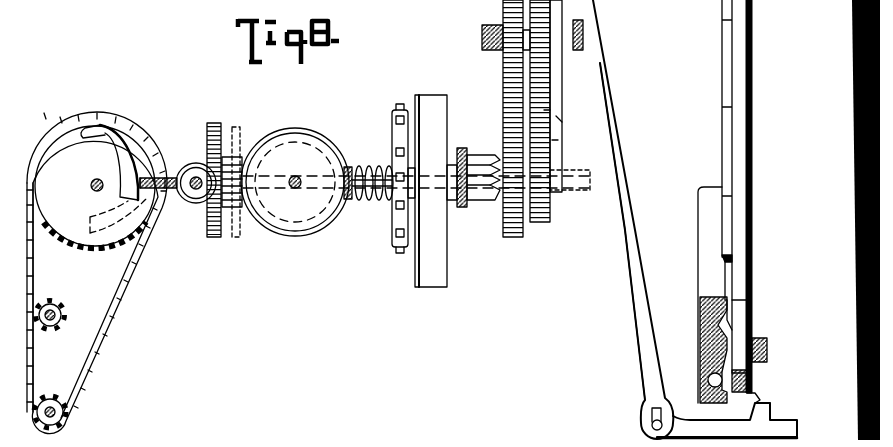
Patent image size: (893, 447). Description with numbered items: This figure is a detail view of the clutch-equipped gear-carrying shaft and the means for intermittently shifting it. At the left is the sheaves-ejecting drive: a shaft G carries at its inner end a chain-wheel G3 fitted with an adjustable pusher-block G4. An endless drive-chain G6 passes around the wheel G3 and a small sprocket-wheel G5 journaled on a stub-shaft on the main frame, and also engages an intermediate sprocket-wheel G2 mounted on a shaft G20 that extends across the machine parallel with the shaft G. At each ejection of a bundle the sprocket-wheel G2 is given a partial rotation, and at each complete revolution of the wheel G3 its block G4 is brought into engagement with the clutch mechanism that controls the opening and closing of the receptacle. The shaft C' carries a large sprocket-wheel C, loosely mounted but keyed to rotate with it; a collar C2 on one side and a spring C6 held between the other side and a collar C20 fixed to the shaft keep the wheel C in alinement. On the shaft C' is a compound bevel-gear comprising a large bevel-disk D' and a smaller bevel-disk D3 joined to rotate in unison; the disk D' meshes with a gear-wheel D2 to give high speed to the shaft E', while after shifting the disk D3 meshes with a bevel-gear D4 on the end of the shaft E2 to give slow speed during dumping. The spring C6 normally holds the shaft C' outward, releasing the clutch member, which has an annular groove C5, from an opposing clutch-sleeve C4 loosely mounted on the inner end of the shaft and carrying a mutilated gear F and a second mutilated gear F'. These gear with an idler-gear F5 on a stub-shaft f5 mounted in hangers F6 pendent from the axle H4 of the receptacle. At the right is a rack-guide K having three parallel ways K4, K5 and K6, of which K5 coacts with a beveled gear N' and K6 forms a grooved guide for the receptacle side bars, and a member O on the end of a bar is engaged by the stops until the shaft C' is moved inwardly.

The shaft G is at (91, 181).
The chain-wheel G3 is at (95, 187).
The adjustable pusher-block G4 is at (122, 152).
The endless drive-chain G6 is at (132, 286).
The sprocket-wheel G2 is at (62, 305).
The shaft G20 is at (52, 318).
The small sprocket-wheel G5 is at (70, 413).
The shaft C' is at (159, 201).
The gear-wheel D2 is at (192, 165).
The shaft E' is at (189, 212).
The large bevel-disk D' is at (208, 162).
The smaller bevel-disk D3 is at (240, 150).
The bevel-gear D4 is at (302, 135).
The shaft E2 is at (296, 176).
The collar C20 is at (350, 165).
The spring C6 is at (373, 200).
The large sprocket-wheel C is at (387, 178).
The collar C2 is at (416, 170).
The annular groove C5 is at (462, 148).
The clutch-sleeve C4 is at (492, 200).
The mutilated gear F is at (513, 133).
The axle H4 is at (482, 38).
The second mutilated gear F' is at (560, 124).
The idler-gear F5 is at (546, 112).
The stub-shaft f5 is at (562, 119).
The hangers F6 is at (556, 140).
The rack-guide K is at (712, 222).
The way K4 is at (733, 312).
The way K5 is at (716, 350).
The way K6 is at (708, 380).
The beveled gear N' is at (775, 342).
The member O is at (760, 396).